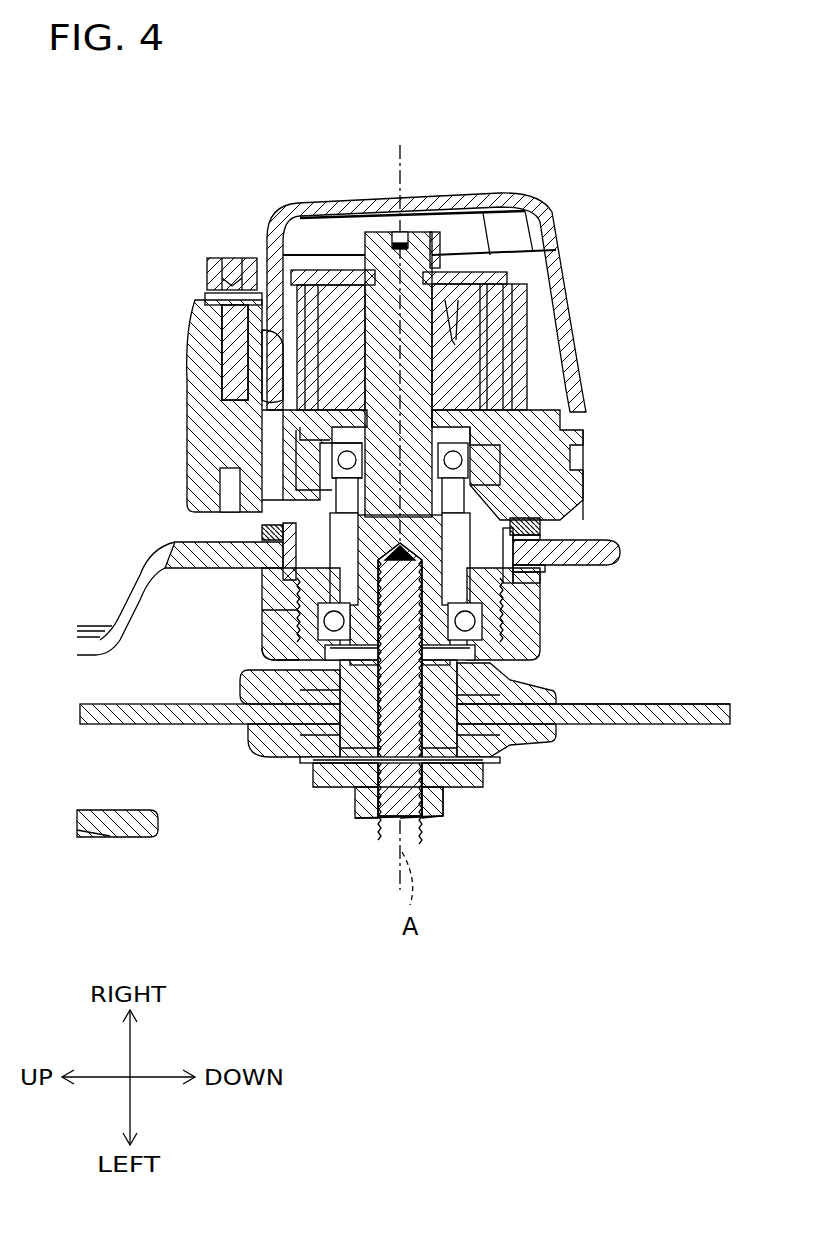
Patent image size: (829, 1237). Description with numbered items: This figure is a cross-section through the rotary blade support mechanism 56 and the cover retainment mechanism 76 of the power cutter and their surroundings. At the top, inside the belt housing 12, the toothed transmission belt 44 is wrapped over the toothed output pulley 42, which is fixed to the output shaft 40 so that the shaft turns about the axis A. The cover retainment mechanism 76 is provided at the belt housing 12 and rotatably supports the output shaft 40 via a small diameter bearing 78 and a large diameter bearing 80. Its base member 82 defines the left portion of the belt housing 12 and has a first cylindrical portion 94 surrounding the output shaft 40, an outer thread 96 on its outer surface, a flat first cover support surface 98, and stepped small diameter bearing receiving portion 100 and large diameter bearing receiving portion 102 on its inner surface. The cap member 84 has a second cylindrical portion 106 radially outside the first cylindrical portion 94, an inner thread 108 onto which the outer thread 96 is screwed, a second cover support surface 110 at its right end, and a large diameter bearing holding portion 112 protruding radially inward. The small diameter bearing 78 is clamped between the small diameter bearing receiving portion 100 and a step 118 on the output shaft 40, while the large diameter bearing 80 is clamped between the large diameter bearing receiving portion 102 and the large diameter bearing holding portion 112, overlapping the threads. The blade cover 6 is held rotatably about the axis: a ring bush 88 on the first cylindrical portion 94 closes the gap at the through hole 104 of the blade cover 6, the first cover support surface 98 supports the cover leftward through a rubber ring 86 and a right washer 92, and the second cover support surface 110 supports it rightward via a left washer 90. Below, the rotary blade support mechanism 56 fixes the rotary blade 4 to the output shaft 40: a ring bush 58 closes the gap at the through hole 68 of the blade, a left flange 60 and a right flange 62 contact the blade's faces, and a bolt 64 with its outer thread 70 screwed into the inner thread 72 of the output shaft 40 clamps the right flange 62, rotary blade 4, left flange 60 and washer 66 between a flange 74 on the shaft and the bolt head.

The rotary blade 4 is at (700, 724).
The blade cover 6 is at (130, 600).
The belt housing 12 is at (584, 344).
The output shaft 40 is at (380, 355).
The output pulley 42 is at (322, 265).
The transmission belt 44 is at (265, 262).
The rotary blade support mechanism 56 is at (552, 818).
The ring bush 58 is at (500, 757).
The left flange 60 is at (540, 742).
The right flange 62 is at (560, 700).
The bolt 64 is at (430, 818).
The washer 66 is at (462, 780).
The through hole 68 is at (500, 700).
The outer thread 70 is at (343, 787).
The inner thread 72 is at (395, 640).
The flange 74 is at (457, 680).
The cover retainment mechanism 76 is at (727, 476).
The small diameter bearing 78 is at (240, 430).
The large diameter bearing 80 is at (483, 628).
The base member 82 is at (563, 430).
The cap member 84 is at (270, 602).
The rubber ring 86 is at (530, 538).
The ring bush 88 is at (530, 555).
The left washer 90 is at (540, 578).
The right washer 92 is at (513, 545).
The first cylindrical portion 94 is at (342, 500).
The outer thread 96 is at (290, 545).
The first cover support surface 98 is at (520, 528).
The small diameter bearing receiving portion 100 is at (252, 398).
The large diameter bearing receiving portion 102 is at (490, 610).
The through hole 104 is at (540, 528).
The second cylindrical portion 106 is at (285, 620).
The inner thread 108 is at (300, 648).
The second cover support surface 110 is at (530, 567).
The large diameter bearing holding portion 112 is at (470, 650).
The step 118 is at (335, 460).